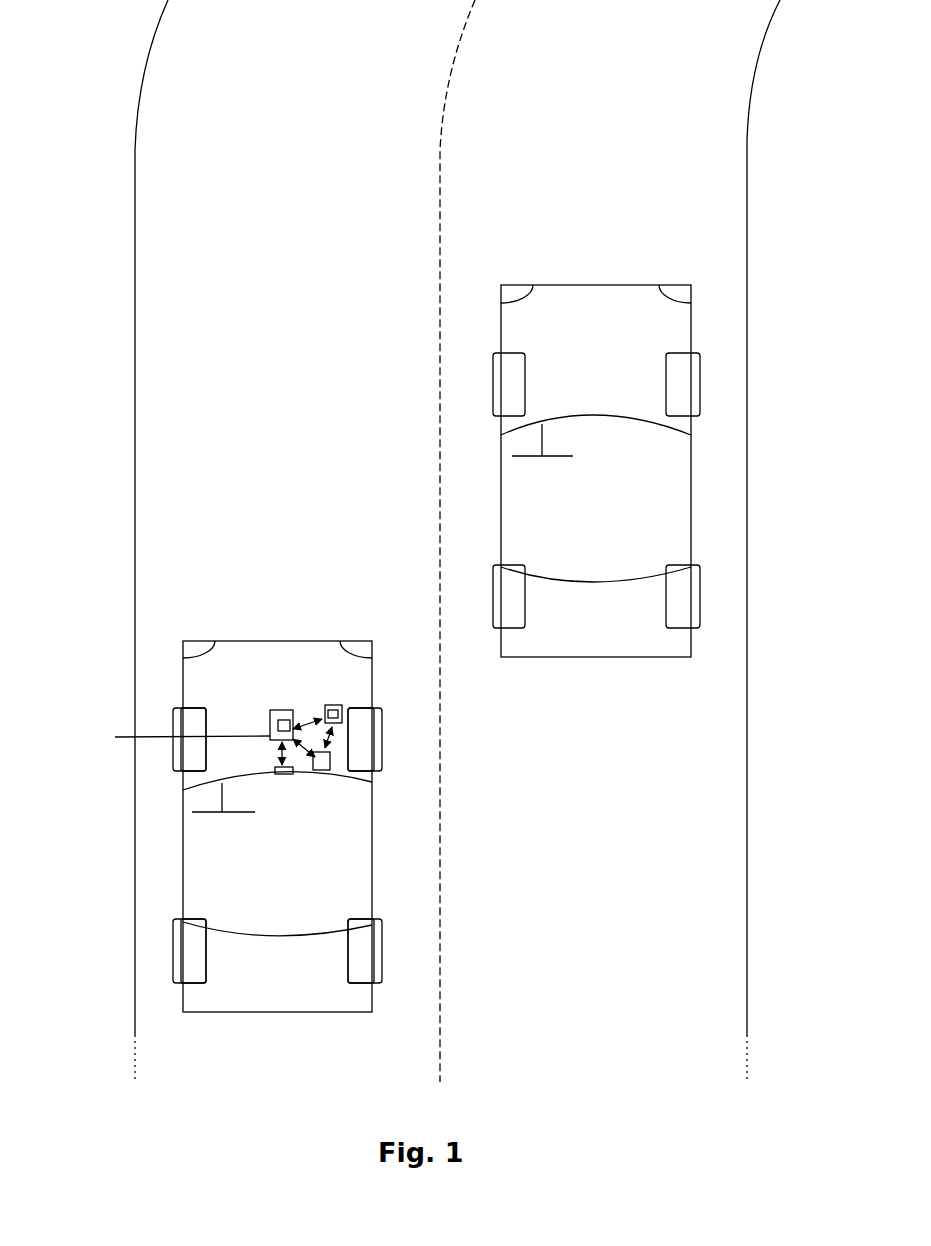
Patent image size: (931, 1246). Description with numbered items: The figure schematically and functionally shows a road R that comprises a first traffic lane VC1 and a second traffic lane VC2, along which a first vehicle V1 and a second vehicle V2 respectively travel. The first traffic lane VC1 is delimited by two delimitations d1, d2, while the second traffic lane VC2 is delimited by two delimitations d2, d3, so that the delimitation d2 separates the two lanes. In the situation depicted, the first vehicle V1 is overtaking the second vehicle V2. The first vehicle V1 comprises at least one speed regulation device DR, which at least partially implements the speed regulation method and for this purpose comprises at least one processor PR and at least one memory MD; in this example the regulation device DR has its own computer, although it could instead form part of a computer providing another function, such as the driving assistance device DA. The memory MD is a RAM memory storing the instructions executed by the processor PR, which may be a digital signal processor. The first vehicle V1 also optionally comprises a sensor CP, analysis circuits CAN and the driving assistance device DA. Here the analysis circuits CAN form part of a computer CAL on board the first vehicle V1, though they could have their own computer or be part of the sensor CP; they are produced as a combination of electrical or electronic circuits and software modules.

The road R is at (439, 541).
The delimitation d1 is at (135, 512).
The delimitation d2 is at (442, 510).
The delimitation d3 is at (748, 505).
The first traffic lane VC1 is at (313, 213).
The second traffic lane VC2 is at (613, 213).
The first vehicle V1 is at (273, 1013).
The second vehicle V2 is at (593, 660).
The analysis circuits CAN is at (272, 726).
The computer CAL is at (161, 736).
The sensor CP is at (283, 776).
The speed regulation device DR is at (340, 706).
The processor PR is at (444, 739).
The memory MD is at (342, 722).
The driving assistance device DA is at (330, 770).